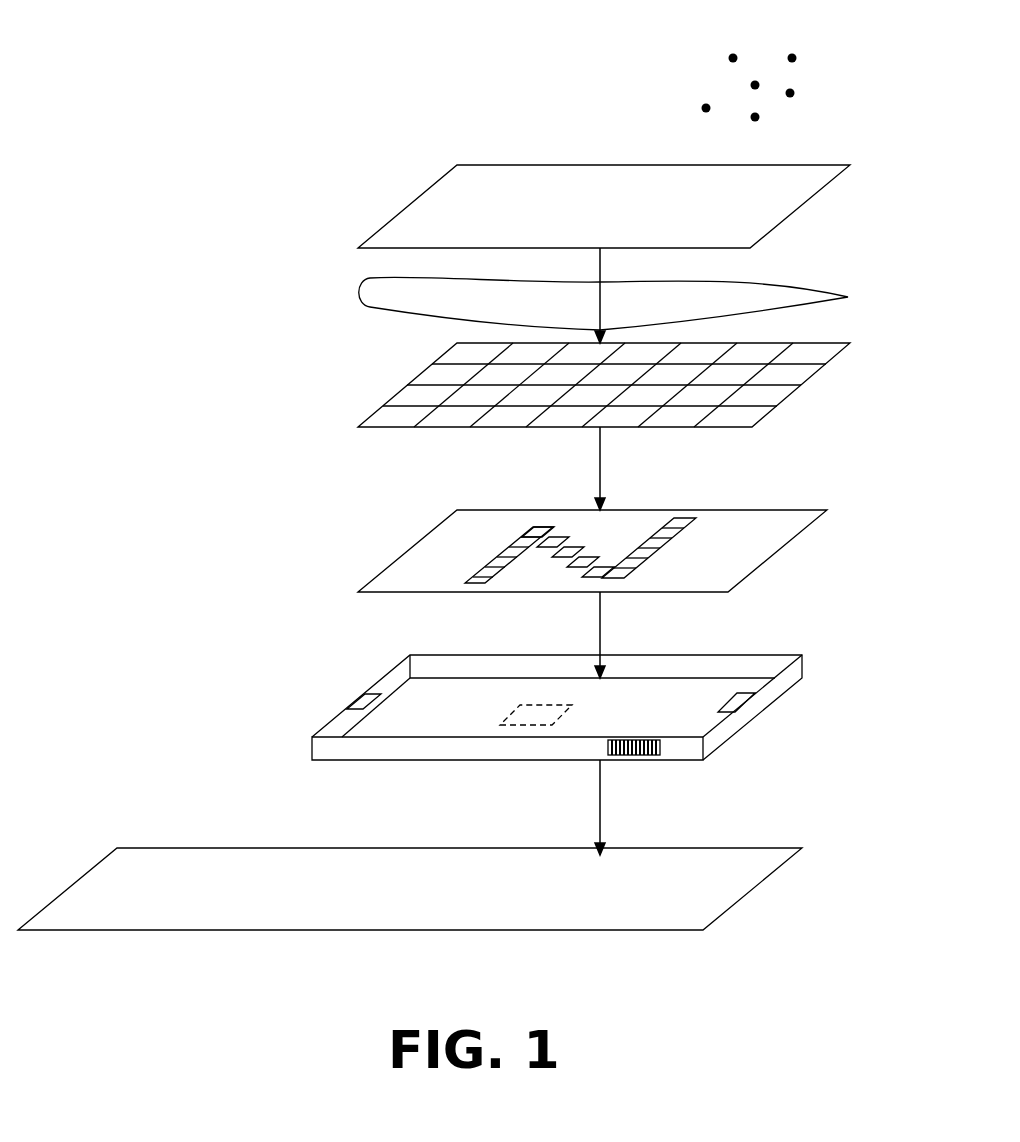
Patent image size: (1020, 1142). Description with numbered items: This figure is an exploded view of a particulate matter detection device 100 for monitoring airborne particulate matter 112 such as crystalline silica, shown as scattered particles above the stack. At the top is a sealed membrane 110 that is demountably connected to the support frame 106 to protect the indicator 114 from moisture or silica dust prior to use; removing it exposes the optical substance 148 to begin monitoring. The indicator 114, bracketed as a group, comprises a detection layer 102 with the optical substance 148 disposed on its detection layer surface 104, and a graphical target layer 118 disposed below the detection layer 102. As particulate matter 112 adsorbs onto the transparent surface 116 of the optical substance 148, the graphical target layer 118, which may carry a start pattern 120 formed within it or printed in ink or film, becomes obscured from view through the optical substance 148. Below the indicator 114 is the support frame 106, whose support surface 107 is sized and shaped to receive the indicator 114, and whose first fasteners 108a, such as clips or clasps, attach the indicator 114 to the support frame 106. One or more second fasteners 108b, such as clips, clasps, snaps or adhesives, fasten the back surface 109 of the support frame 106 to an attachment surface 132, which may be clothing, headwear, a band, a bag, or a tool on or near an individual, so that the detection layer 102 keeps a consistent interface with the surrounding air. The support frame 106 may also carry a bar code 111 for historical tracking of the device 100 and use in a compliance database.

The particulate matter detection device 100 is at (303, 44).
The detection layer 102 is at (810, 375).
The detection layer surface 104 is at (760, 355).
The support frame 106 is at (803, 672).
The support surface 107 is at (681, 709).
The first fasteners 108a is at (356, 706).
The second fasteners 108b is at (535, 726).
The back surface 109 is at (415, 726).
The sealed membrane 110 is at (810, 198).
The bar code 111 is at (660, 748).
The particulate matter 112 is at (812, 43).
The indicator 114 is at (253, 253).
The transparent surface 116 is at (385, 292).
The graphical target layer 118 is at (773, 555).
The start pattern 120 is at (408, 549).
The attachment surface 132 is at (698, 892).
The optical substance 148 is at (358, 305).